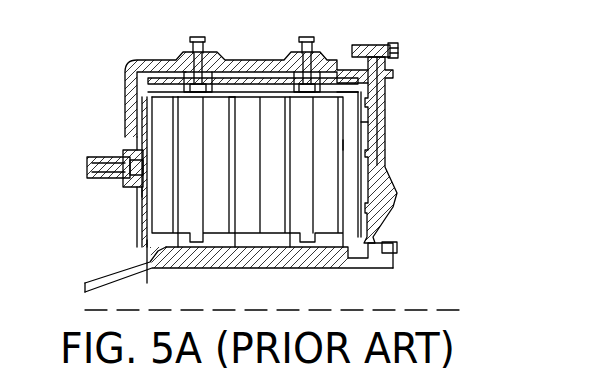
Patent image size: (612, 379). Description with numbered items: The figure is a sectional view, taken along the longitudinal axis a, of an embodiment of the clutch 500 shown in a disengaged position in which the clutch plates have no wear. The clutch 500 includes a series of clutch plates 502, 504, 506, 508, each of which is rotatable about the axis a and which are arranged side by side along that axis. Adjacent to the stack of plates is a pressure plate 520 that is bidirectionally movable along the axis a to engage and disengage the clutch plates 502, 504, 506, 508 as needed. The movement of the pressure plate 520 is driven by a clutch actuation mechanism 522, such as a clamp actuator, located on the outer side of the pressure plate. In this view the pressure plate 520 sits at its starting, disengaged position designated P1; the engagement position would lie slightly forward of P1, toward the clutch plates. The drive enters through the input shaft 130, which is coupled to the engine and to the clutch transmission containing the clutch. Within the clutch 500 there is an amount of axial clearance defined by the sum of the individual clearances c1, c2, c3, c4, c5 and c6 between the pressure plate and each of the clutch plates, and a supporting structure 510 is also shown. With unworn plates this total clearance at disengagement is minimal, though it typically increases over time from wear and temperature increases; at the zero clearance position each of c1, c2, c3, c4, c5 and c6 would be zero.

The clutch 500 is at (320, 113).
The clutch plate 502 is at (162, 223).
The clutch plate 504 is at (218, 223).
The clutch plate 506 is at (263, 217).
The clutch plate 508 is at (330, 223).
The mounting bracket 510 is at (353, 182).
The pressure plate 520 is at (140, 113).
The clutch actuation mechanism 522 is at (105, 155).
The input shaft 130 is at (107, 275).
The axial clearance c1 is at (142, 192).
The axial clearance c2 is at (177, 97).
The axial clearance c3 is at (233, 97).
The axial clearance c4 is at (285, 97).
The axial clearance c5 is at (345, 145).
The axial clearance c6 is at (367, 127).
The starting position P1 is at (131, 259).
The longitudinal axis a is at (290, 289).